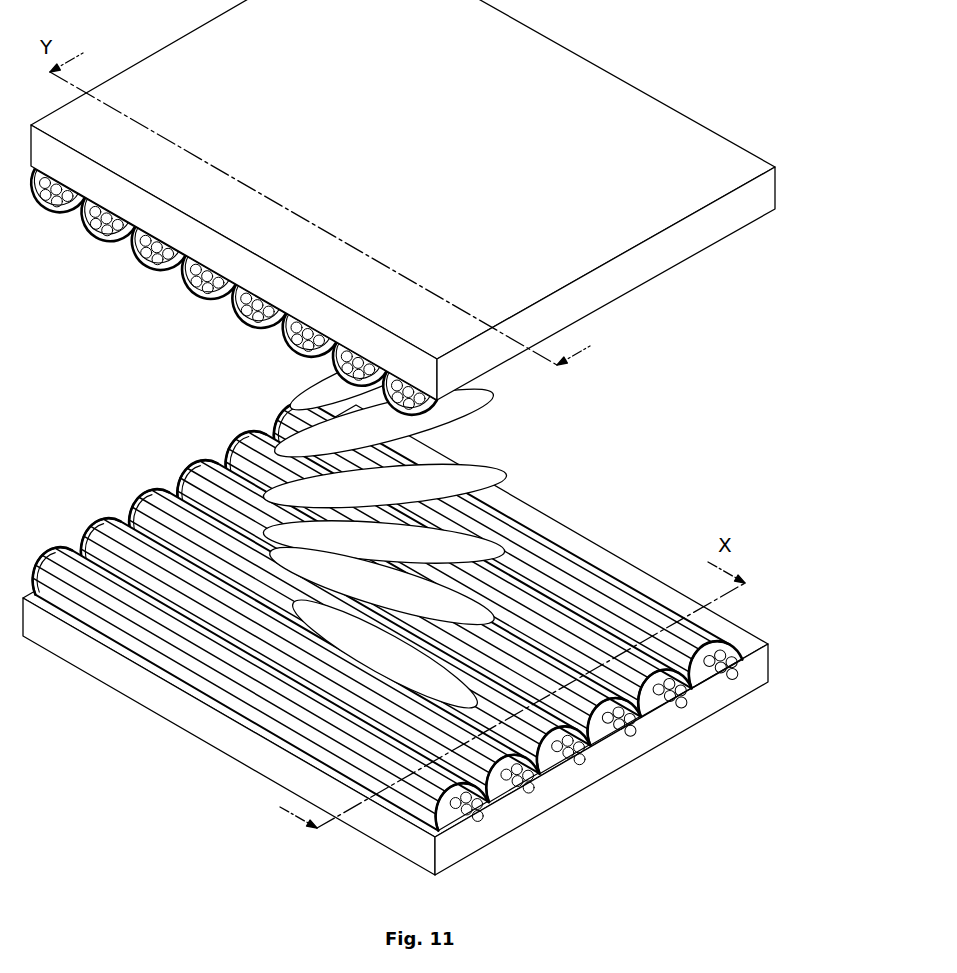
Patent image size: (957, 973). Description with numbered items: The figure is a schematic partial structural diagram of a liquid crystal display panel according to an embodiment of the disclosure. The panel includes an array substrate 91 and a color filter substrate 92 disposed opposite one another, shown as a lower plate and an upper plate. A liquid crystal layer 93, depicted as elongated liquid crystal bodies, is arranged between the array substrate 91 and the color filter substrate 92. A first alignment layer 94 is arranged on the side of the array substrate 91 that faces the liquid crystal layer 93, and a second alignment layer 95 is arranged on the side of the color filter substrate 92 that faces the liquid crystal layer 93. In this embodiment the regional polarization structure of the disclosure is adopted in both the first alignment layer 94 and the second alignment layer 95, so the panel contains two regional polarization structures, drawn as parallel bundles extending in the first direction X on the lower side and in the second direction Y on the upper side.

The array substrate 91 is at (582, 787).
The color filter substrate 92 is at (548, 132).
The liquid crystal layer 93 is at (470, 403).
The first alignment layer 94 is at (613, 723).
The second alignment layer 95 is at (200, 303).